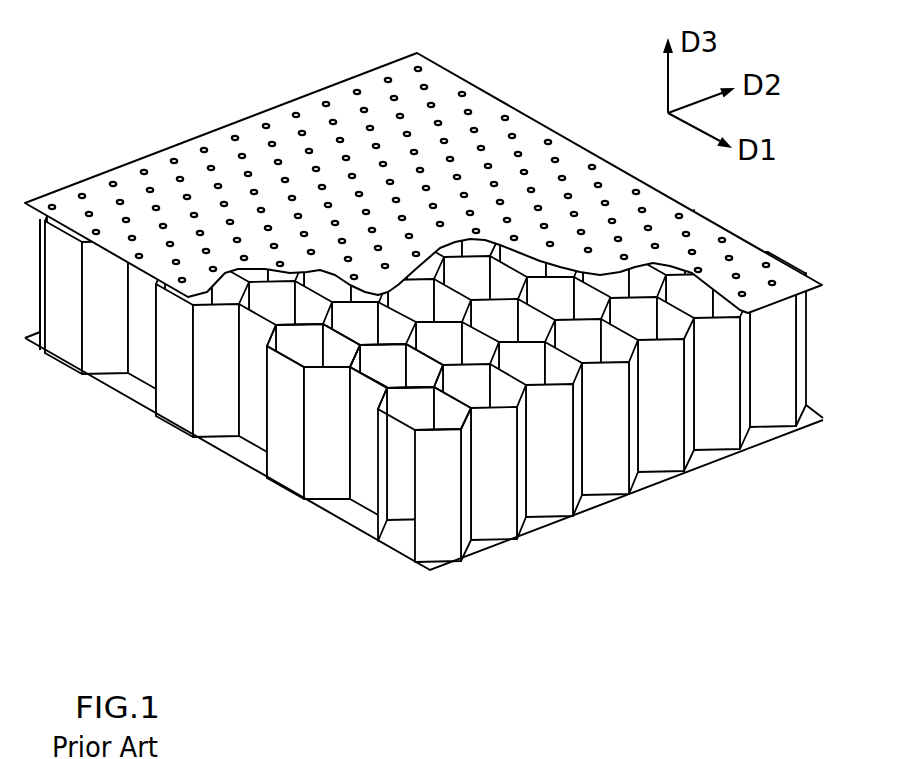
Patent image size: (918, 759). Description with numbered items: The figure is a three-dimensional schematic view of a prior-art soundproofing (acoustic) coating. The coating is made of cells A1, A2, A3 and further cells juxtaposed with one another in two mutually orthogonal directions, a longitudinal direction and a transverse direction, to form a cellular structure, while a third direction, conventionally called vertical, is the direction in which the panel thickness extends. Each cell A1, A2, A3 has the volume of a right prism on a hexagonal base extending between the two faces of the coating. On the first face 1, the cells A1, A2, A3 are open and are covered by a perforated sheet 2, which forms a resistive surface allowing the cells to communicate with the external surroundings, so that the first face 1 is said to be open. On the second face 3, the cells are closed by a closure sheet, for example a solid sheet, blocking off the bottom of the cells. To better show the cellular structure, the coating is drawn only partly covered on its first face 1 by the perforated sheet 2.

The first face 1 is at (253, 145).
The perforated sheet 2 is at (343, 108).
The second face 3 is at (610, 508).
The cell A1 is at (417, 410).
The cell A2 is at (300, 345).
The cell A3 is at (385, 368).